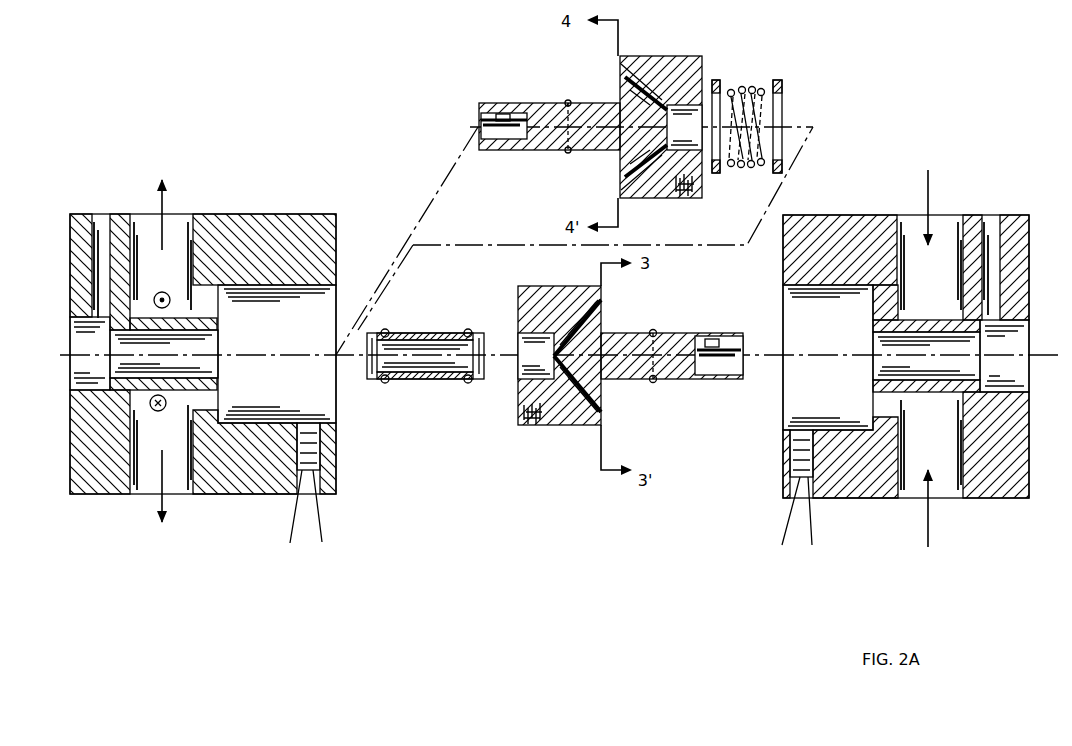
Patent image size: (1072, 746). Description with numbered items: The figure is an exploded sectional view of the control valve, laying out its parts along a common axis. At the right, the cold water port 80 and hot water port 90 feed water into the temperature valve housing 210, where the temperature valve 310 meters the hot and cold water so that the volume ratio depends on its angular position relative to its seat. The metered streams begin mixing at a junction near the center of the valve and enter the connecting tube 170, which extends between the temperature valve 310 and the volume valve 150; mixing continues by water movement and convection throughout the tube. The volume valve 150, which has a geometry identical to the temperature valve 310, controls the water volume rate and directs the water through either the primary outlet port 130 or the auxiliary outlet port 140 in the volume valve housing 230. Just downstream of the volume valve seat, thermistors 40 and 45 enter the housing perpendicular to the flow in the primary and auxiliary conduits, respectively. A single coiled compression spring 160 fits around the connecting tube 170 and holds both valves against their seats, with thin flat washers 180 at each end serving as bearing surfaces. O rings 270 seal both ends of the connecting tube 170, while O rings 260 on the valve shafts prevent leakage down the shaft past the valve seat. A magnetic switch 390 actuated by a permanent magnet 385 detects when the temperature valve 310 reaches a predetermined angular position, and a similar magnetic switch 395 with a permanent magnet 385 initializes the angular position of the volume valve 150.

The thermistor 40 is at (156, 296).
The thermistor 45 is at (165, 410).
The cold water port 80 is at (928, 195).
The hot water port 90 is at (928, 522).
The outlet port 130 is at (163, 197).
The auxiliary outlet port 140 is at (163, 505).
The volume valve 150 is at (632, 57).
The coiled compression spring 160 is at (748, 88).
The connecting tube 170 is at (410, 385).
The thin flat washers 180 is at (713, 82).
The temperature valve housing 210 is at (840, 500).
The volume valve housing 230 is at (221, 497).
The O rings 260 is at (654, 336).
The O rings 270 is at (386, 329).
The temperature valve 310 is at (578, 425).
The permanent magnet 385 is at (684, 198).
The magnetic switch 390 is at (795, 500).
The magnetic switch 395 is at (313, 500).